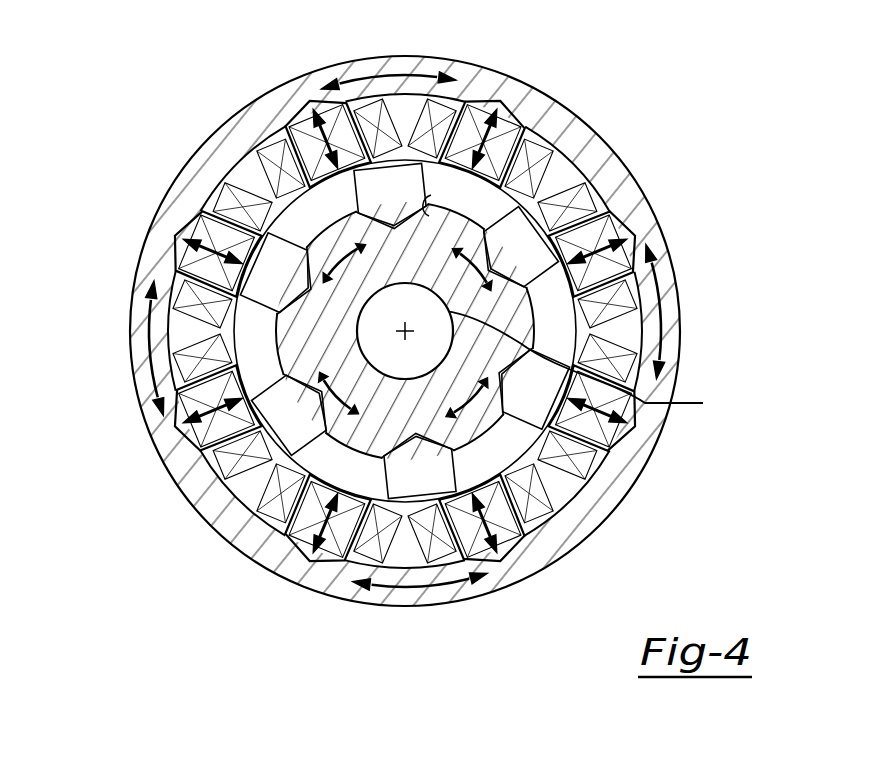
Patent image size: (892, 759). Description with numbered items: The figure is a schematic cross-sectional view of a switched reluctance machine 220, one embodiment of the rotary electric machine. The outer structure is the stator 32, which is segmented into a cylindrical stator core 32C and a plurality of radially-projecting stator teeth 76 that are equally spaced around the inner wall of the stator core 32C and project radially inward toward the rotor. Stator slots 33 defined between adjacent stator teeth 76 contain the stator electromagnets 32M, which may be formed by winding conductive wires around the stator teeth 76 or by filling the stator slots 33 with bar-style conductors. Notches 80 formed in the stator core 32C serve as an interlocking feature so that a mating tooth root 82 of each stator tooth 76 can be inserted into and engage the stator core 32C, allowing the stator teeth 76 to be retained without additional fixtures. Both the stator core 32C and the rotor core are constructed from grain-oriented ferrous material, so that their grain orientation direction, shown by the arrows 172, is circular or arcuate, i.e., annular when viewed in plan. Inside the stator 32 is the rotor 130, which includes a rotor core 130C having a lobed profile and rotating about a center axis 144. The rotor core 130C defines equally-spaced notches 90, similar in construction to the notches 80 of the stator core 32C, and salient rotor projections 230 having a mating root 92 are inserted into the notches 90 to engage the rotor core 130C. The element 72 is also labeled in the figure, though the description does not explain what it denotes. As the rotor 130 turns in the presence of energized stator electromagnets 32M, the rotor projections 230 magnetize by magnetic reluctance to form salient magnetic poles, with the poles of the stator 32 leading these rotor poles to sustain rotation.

The stator 32 is at (736, 246).
The stator core 32C is at (655, 238).
The stator electromagnets 32M is at (533, 157).
The stator slots 33 is at (250, 168).
The bridge 72 is at (525, 128).
The stator teeth 76 is at (476, 124).
The notches 80 is at (178, 257).
The tooth root 82 is at (178, 418).
The notches 90 is at (432, 220).
The mating root 92 is at (428, 202).
The rotor 130 is at (323, 343).
The rotor core 130C is at (378, 400).
The center axis 144 is at (572, 363).
The grain orientation direction arrows 172 is at (388, 66).
The switched reluctance machine 220 is at (228, 40).
The salient rotor projections 230 is at (401, 207).